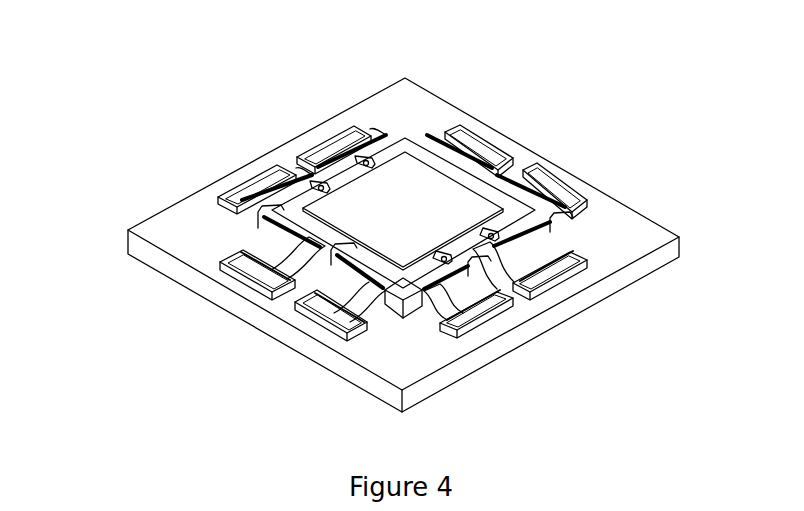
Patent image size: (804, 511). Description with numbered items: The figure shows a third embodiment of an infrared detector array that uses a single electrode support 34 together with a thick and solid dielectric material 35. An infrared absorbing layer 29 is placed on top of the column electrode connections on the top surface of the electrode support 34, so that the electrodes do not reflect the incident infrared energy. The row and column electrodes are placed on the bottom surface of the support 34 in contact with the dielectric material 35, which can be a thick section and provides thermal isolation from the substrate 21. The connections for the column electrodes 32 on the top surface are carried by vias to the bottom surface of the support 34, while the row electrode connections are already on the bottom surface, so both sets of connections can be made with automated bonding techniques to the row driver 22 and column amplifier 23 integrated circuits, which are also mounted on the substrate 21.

The substrate 21 is at (183, 217).
The row driver 22 is at (482, 142).
The column amplifier 23 is at (257, 180).
The infrared absorbing layer 29 is at (403, 176).
The column electrodes 32 is at (492, 233).
The electrode support 34 is at (428, 142).
The dielectric material 35 is at (410, 302).